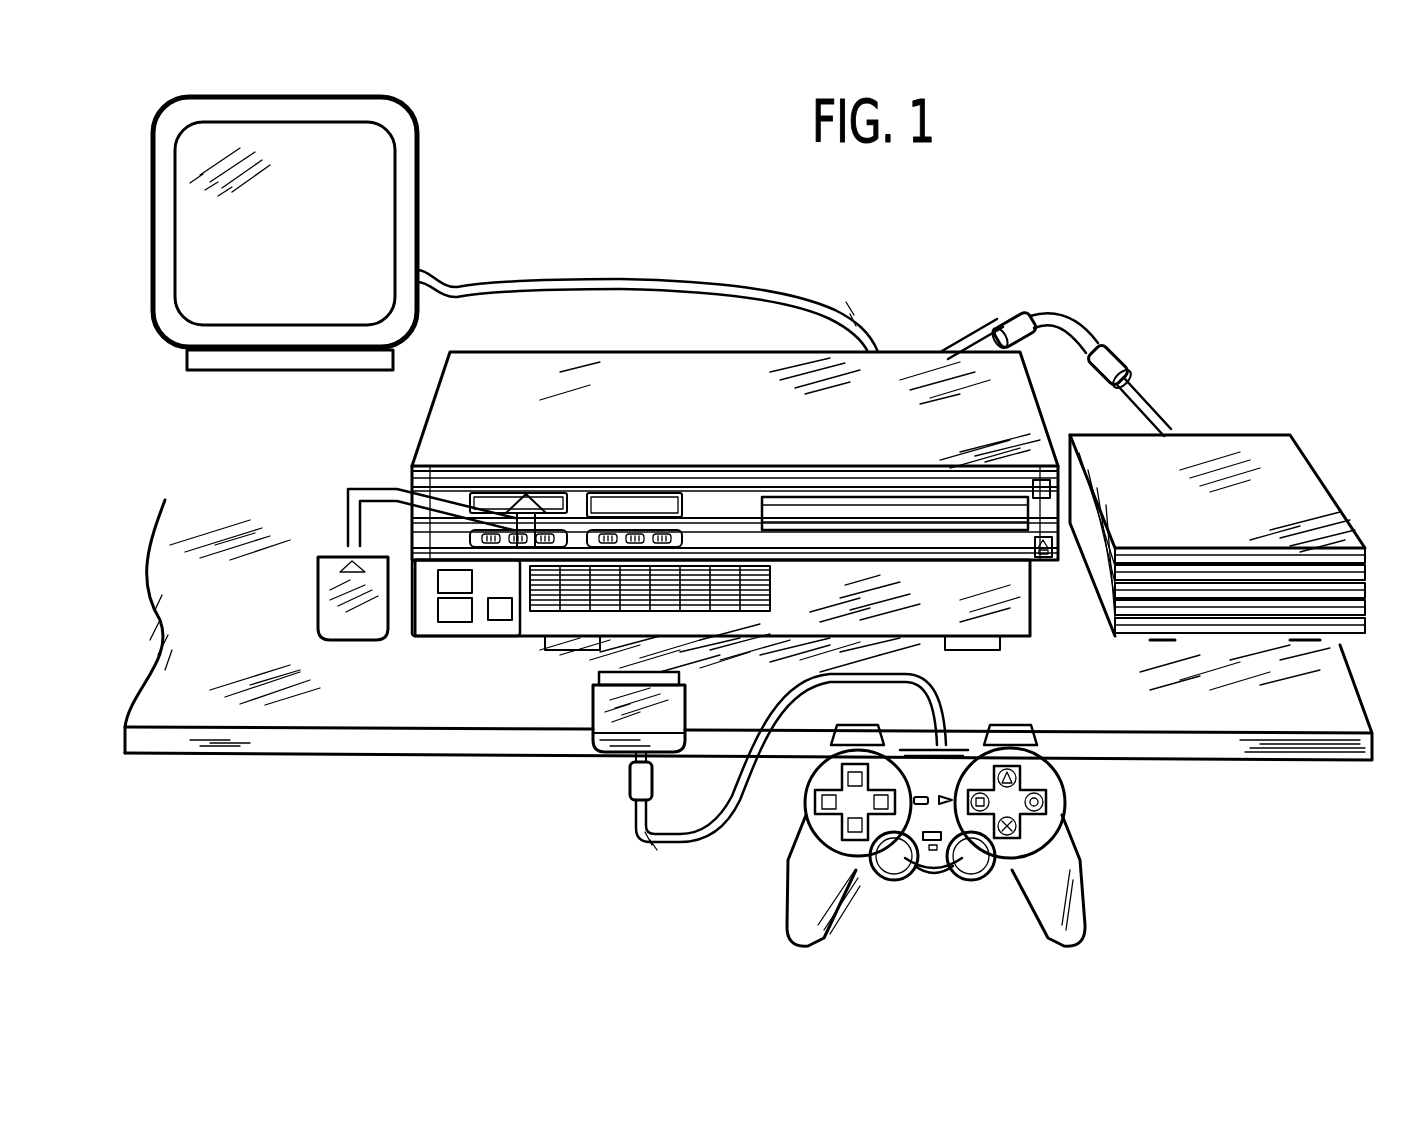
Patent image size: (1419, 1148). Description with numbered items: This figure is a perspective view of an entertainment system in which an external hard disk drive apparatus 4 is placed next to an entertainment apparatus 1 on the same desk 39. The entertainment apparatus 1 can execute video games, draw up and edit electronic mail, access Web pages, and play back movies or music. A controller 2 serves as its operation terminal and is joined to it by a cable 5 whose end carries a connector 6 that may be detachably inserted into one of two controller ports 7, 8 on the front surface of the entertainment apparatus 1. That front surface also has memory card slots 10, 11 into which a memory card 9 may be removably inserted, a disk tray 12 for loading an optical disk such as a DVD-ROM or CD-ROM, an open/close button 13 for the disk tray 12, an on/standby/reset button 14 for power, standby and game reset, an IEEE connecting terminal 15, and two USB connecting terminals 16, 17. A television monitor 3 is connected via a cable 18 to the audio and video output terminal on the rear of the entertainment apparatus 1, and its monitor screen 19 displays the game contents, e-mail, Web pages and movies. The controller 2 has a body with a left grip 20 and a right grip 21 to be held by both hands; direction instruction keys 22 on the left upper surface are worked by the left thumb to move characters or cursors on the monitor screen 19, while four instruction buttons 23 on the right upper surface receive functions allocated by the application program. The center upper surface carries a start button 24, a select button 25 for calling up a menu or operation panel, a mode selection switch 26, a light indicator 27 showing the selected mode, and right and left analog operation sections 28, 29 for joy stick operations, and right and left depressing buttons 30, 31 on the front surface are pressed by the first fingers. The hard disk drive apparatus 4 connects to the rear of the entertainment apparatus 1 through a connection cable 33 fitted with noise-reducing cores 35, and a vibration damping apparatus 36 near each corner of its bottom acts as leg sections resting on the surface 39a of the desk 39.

The entertainment apparatus 1 is at (588, 378).
The controller 2 is at (926, 792).
The television monitor 3 is at (418, 207).
The hard disk drive apparatus 4 is at (1232, 448).
The cable 5 is at (690, 850).
The connector 6 is at (668, 708).
The controller port 7 is at (521, 556).
The controller port 8 is at (655, 538).
The memory card 9 is at (342, 610).
The memory card slot 10 is at (530, 498).
The memory card slot 11 is at (630, 500).
The disk tray 12 is at (915, 513).
The open/close button 13 is at (1046, 558).
The on/standby/reset button 14 is at (1042, 480).
The IEEE 1394 connecting terminal 15 is at (500, 608).
The USB connecting terminal 16 is at (455, 578).
The USB connecting terminal 17 is at (455, 608).
The cable 18 is at (662, 288).
The monitor screen 19 is at (375, 158).
The left grip 20 is at (795, 902).
The right grip 21 is at (1060, 848).
The direction instruction keys 22 is at (826, 810).
The instruction buttons 23 is at (1048, 760).
The start button 24 is at (946, 795).
The select button 25 is at (921, 795).
The mode selection switch 26 is at (908, 870).
The light indicator 27 is at (932, 852).
The analog operation section 28 is at (885, 867).
The analog operation section 29 is at (975, 870).
The depressing button 30 is at (850, 728).
The depressing button 31 is at (1010, 728).
The connection cable 33 is at (1155, 410).
The cores 35 is at (1008, 320).
The vibration damping apparatus 36 is at (1160, 641).
The desk 39 is at (1180, 745).
The surface 39a is at (1195, 720).